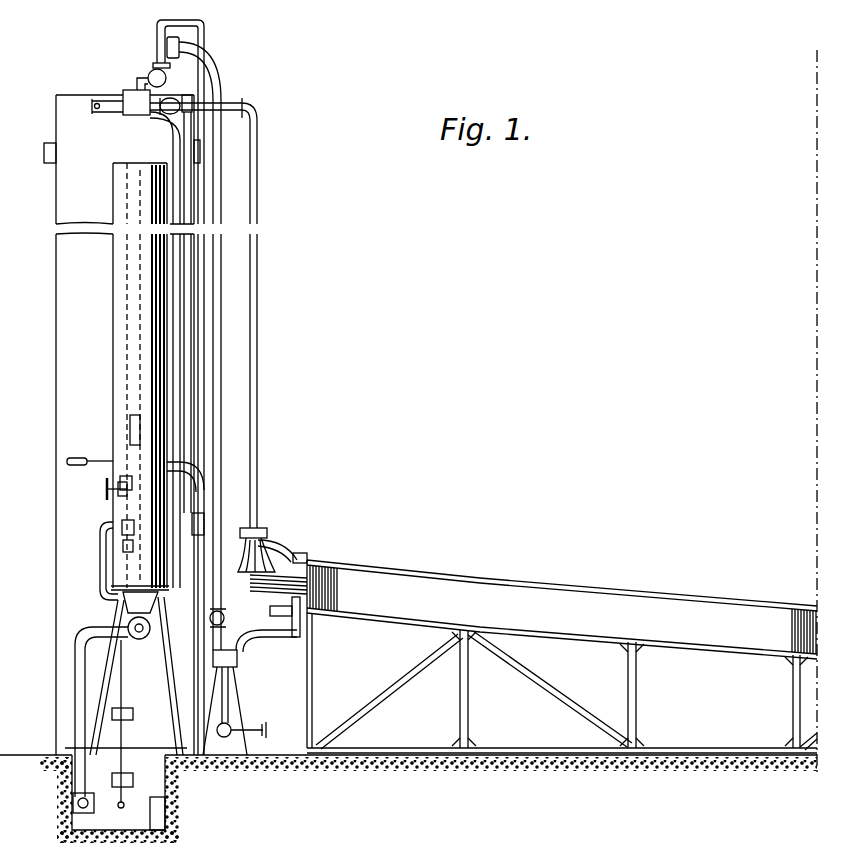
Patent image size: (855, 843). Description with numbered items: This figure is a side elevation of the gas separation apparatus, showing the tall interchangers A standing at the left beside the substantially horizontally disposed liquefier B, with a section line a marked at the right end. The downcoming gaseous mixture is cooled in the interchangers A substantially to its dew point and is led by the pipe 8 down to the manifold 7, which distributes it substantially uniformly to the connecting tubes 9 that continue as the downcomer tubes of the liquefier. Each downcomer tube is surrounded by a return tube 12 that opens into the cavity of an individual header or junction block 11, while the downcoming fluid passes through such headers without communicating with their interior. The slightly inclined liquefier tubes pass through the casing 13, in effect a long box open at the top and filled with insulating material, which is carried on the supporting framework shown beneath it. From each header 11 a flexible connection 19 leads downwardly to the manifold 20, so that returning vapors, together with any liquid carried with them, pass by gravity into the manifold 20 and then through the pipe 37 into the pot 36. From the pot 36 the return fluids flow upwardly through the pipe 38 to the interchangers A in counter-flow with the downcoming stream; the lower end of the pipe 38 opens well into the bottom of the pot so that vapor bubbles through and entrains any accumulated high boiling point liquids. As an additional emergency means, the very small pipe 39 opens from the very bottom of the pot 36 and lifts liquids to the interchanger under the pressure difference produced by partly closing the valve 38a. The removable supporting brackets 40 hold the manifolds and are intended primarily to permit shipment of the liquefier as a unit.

The interchangers A is at (122, 425).
The liquefier B is at (562, 647).
The section line a is at (809, 415).
The manifold 7 is at (262, 528).
The pipe 8 is at (257, 407).
The connecting tubes 9 is at (283, 552).
The header or junction block 11 is at (250, 574).
The return tube 12 is at (346, 561).
The casing 13 is at (562, 612).
The connection 19 is at (273, 590).
The manifold 20 is at (294, 637).
The pot 36 is at (234, 688).
The pipe 37 is at (252, 632).
The pipe 38 is at (229, 498).
The valve 38a is at (210, 620).
The very small pipe 39 is at (205, 589).
The supporting brackets 40 is at (308, 557).